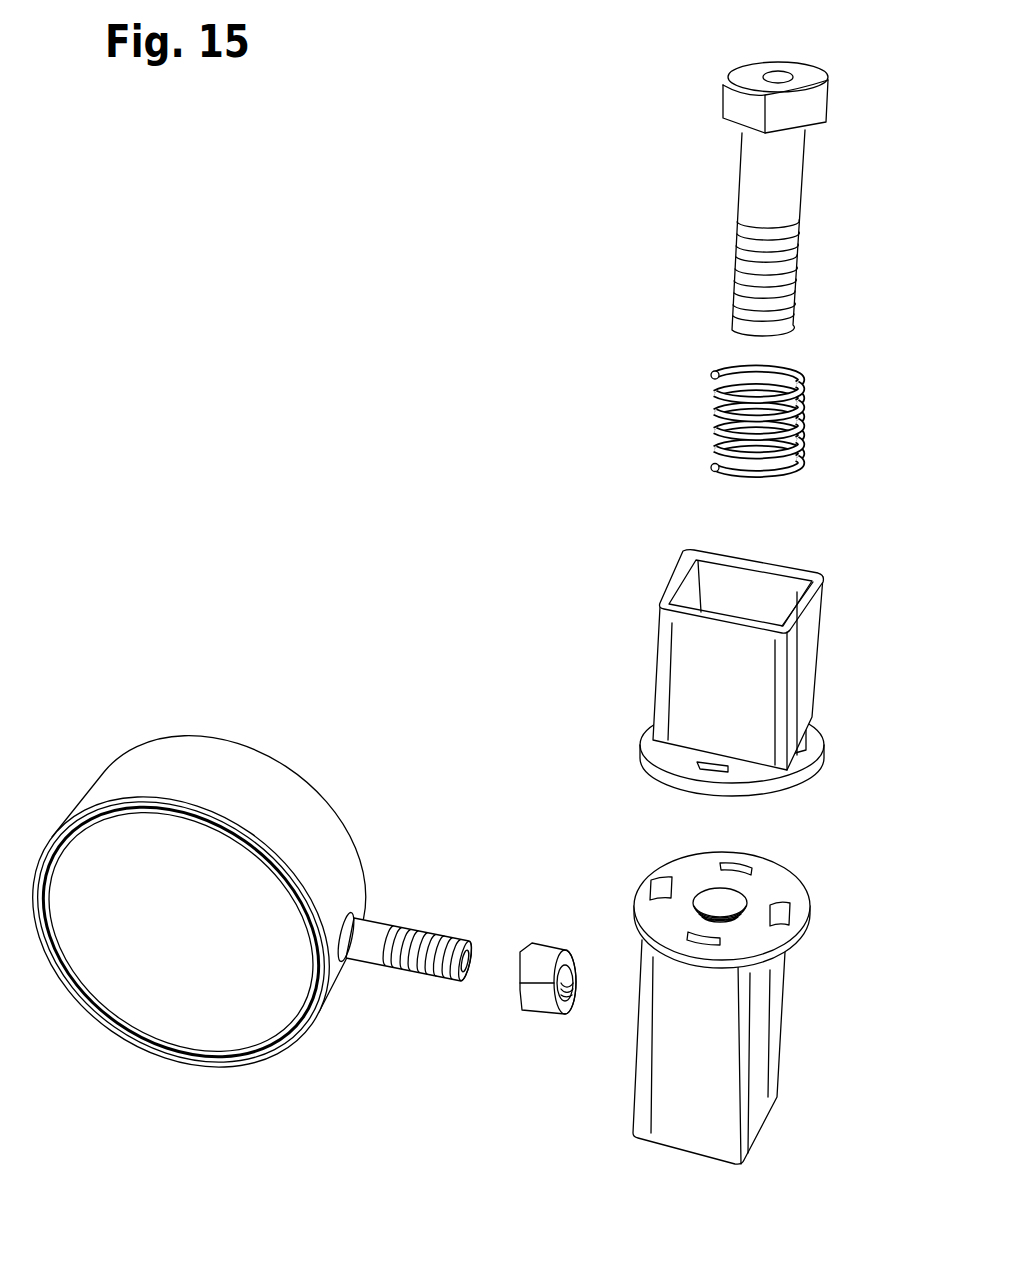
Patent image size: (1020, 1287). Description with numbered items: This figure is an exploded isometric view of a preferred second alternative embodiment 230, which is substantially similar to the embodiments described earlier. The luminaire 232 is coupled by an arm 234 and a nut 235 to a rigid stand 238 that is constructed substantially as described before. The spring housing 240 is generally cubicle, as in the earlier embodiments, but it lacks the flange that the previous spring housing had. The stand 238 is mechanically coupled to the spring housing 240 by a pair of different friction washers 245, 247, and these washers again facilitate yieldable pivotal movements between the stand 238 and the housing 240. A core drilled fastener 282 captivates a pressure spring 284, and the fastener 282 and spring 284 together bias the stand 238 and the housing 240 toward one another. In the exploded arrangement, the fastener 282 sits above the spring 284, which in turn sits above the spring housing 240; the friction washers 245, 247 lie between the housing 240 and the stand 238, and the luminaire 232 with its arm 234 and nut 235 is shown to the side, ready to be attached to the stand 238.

The second alternative embodiment 230 is at (443, 490).
The luminaire 232 is at (236, 732).
The arm 234 is at (437, 927).
The nut 235 is at (531, 1008).
The rigid stand 238 is at (623, 1095).
The spring housing 240 is at (645, 664).
The friction washer 245 is at (645, 745).
The friction washer 247 is at (678, 862).
The core drilled fastener 282 is at (717, 197).
The pressure spring 284 is at (705, 410).